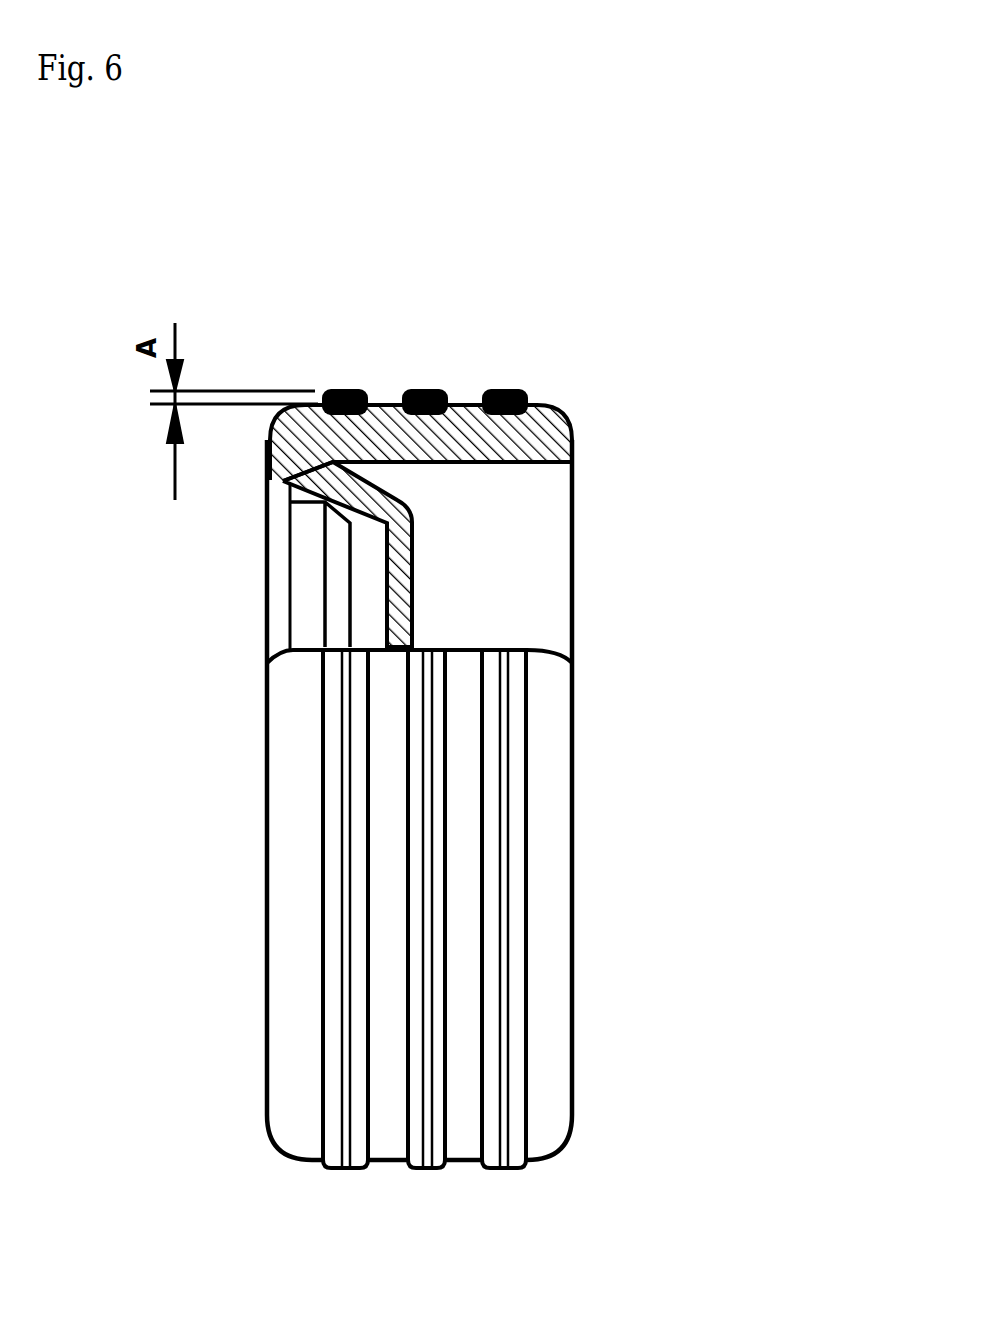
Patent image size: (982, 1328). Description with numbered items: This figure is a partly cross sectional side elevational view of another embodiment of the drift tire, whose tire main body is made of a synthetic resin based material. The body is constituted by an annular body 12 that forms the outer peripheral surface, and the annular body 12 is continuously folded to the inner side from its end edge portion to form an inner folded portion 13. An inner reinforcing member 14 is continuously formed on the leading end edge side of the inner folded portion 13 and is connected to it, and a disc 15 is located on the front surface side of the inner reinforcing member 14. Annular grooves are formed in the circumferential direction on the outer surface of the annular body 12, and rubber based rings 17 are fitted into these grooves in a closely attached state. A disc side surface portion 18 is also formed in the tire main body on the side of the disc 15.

The annular body 12 is at (548, 415).
The inner folded portion 13 is at (300, 515).
The inner reinforcing member 14 is at (413, 560).
The disc 15 is at (273, 623).
The rubber based rings 17 is at (345, 390).
The disc side surface portion 18 is at (435, 652).